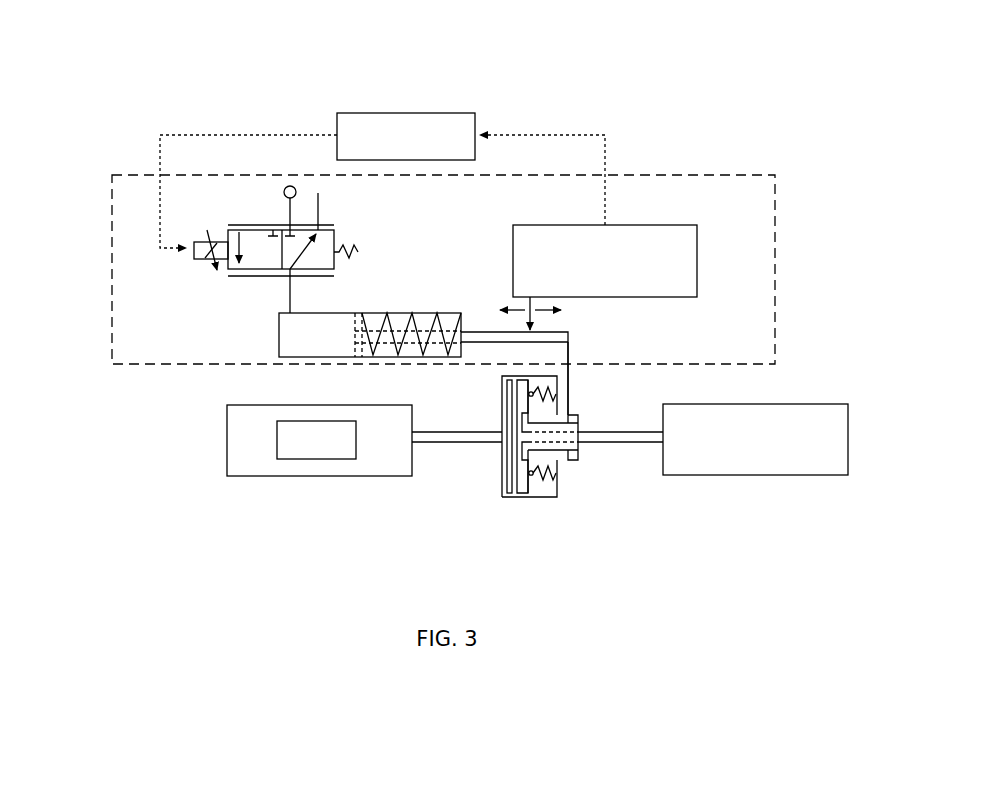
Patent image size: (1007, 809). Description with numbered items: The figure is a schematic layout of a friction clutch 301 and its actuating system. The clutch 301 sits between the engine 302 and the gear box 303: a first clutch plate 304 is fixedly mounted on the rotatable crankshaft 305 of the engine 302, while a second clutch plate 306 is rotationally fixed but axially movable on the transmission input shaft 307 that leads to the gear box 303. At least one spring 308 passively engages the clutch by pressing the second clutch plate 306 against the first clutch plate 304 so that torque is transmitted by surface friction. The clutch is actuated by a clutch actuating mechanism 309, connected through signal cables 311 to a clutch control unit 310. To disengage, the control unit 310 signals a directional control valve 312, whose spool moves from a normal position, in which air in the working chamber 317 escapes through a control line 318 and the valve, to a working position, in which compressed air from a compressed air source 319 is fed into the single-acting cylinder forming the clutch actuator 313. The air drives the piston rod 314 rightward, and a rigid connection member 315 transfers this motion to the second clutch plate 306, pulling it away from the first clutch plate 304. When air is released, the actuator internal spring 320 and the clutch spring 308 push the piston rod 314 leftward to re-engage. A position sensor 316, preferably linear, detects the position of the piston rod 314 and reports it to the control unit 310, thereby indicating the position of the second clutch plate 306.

The friction clutch 301 is at (509, 505).
The engine 302 is at (319, 440).
The gear box 303 is at (755, 439).
The first clutch plate 304 is at (503, 480).
The crankshaft 305 is at (440, 437).
The second clutch plate 306 is at (528, 386).
The transmission input shaft 307 is at (620, 442).
The spring 308 is at (545, 482).
The clutch actuating mechanism 309 is at (680, 175).
The clutch control unit 310 is at (406, 136).
The signal cables 311 is at (535, 135).
The directional control valve 312 is at (215, 284).
The clutch actuator 313 is at (278, 347).
The piston rod 314 is at (500, 337).
The connection member 315 is at (568, 355).
The position sensor 316 is at (590, 277).
The working chamber 317 is at (300, 328).
The control line 318 is at (287, 285).
The compressed air source 319 is at (285, 189).
The actuator internal spring 320 is at (435, 313).